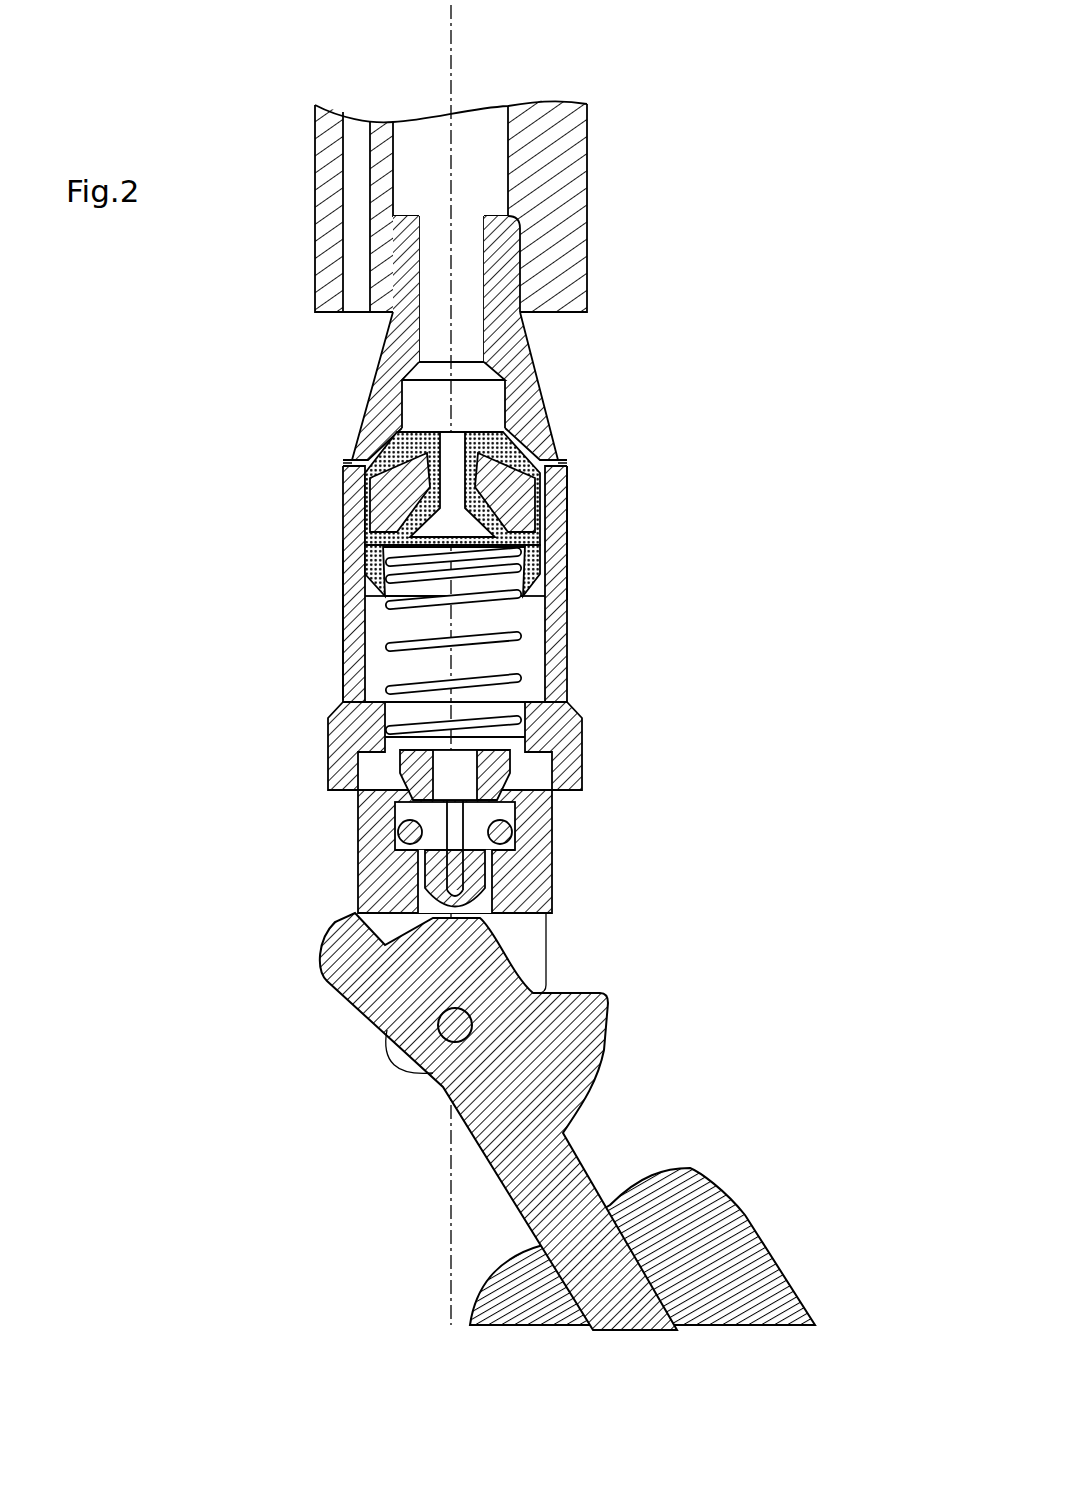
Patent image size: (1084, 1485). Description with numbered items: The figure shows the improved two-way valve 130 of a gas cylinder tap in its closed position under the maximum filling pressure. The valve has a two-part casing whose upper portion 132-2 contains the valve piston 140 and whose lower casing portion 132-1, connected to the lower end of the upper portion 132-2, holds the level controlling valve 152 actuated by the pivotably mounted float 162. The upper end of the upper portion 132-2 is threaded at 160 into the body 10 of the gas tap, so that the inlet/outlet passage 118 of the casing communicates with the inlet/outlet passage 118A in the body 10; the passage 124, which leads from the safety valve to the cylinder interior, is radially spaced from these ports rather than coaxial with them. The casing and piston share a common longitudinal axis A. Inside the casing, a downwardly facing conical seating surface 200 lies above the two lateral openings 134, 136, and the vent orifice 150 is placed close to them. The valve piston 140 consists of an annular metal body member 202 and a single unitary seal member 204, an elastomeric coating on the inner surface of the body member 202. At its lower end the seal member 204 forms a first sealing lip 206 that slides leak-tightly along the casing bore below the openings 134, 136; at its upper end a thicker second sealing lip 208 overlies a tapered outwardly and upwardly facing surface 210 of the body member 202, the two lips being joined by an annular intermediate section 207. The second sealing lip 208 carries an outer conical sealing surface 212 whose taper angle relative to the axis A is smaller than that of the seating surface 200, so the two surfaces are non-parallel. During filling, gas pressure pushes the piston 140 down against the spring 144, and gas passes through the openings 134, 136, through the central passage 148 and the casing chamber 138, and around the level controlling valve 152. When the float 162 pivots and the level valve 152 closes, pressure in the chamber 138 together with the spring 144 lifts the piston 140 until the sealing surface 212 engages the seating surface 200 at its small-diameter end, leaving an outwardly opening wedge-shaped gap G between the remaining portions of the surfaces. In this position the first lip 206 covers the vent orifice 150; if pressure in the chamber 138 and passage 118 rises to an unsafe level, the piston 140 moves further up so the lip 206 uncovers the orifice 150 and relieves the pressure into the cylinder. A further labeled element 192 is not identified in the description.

The body of the gas tap 10 is at (466, 206).
The inlet/outlet passage 118 is at (454, 305).
The inlet/outlet passage of the gas tap body 118A is at (477, 142).
The passage 124 is at (355, 224).
The threaded connection 160 is at (513, 260).
The longitudinal axis A is at (455, 307).
The single unitary seal member 204 is at (500, 372).
The central passage 148 is at (447, 425).
The second sealing lip 208 is at (522, 425).
The seating surface 200 is at (386, 477).
The wedge-shaped gap G is at (368, 464).
The sealing surface 212 is at (553, 450).
The valve piston 140 is at (570, 507).
The tapered outwardly and upwardly facing surface 210 is at (368, 478).
The lateral opening 136 is at (573, 499).
The lateral opening 134 is at (345, 507).
The annular metal body member 202 is at (567, 523).
The annular intermediate section 207 is at (350, 572).
The first sealing lip 206 is at (548, 590).
The vent orifice 150 is at (350, 592).
The casing chamber 138 is at (523, 645).
The two-way valve 130 is at (501, 729).
The guide surface 192 is at (352, 668).
The upper casing portion 132-2 is at (568, 729).
The spring 144 is at (372, 702).
The level controlling valve 152 is at (555, 797).
The lower casing portion 132-1 is at (535, 885).
The float 162 is at (707, 1190).